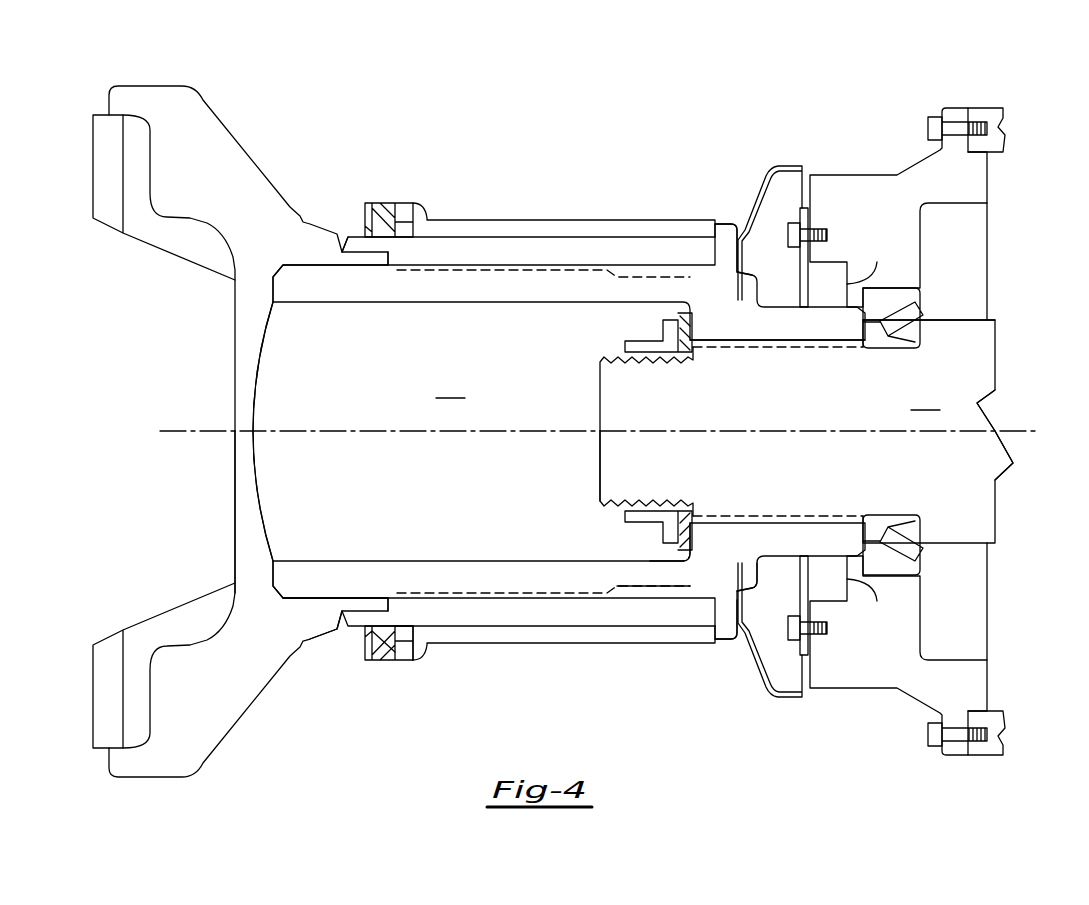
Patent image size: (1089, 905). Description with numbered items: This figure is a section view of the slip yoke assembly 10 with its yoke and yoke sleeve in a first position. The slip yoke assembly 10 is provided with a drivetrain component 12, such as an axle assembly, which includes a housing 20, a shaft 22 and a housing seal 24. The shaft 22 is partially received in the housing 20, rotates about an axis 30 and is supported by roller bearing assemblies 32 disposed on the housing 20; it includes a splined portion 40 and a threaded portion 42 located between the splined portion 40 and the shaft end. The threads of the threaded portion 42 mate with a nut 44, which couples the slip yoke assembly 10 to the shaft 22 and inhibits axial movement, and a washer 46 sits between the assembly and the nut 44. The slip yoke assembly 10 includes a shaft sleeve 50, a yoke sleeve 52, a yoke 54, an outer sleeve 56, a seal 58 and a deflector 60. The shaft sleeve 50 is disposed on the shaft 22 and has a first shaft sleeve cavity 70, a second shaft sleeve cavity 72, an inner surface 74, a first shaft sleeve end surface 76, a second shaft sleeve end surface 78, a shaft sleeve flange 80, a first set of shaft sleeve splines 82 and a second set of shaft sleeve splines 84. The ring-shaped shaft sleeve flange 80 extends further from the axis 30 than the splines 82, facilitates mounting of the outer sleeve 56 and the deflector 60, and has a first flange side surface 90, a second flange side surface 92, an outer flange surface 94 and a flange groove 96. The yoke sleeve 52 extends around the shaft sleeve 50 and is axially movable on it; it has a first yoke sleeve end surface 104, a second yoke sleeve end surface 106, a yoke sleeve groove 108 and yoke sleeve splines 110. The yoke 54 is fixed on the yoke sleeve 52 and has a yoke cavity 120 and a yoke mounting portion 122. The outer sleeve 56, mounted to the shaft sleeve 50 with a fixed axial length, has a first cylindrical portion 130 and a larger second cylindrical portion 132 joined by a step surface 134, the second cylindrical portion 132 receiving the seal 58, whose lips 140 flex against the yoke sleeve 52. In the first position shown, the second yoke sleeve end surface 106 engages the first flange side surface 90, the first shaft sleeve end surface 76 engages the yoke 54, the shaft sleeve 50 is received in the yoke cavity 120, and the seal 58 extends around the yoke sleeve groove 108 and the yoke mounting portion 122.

The slip yoke assembly 10 is at (112, 74).
The drivetrain component 12 is at (986, 104).
The housing 20 is at (850, 175).
The shaft 22 is at (806, 431).
The housing seal 24 is at (873, 280).
The axis 30 is at (1020, 420).
The roller bearing assembly 32 is at (921, 300).
The splined portion 40 is at (795, 340).
The threaded portion 42 is at (612, 503).
The nut 44 is at (637, 326).
The washer 46 is at (682, 546).
The shaft sleeve 50 is at (287, 280).
The yoke sleeve 52 is at (537, 245).
The yoke 54 is at (93, 167).
The outer sleeve 56 is at (487, 222).
The seal 58 is at (365, 232).
The deflector 60 is at (754, 184).
The first shaft sleeve cavity 70 is at (451, 385).
The second shaft sleeve cavity 72 is at (841, 500).
The inner surface 74 is at (340, 560).
The first shaft sleeve end surface 76 is at (236, 572).
The second shaft sleeve end surface 78 is at (914, 548).
The shaft sleeve flange 80 is at (708, 242).
The first set of shaft sleeve splines 82 is at (467, 603).
The second set of shaft sleeve splines 84 is at (740, 340).
The first flange side surface 90 is at (672, 623).
The second flange side surface 92 is at (740, 608).
The outer flange surface 94 is at (730, 640).
The flange groove 96 is at (693, 627).
The first yoke sleeve end surface 104 is at (340, 617).
The second yoke sleeve end surface 106 is at (673, 617).
The yoke sleeve groove 108 is at (375, 603).
The set of yoke sleeve splines 110 is at (618, 595).
The yoke cavity 120 is at (266, 406).
The yoke mounting portion 122 is at (367, 266).
The first cylindrical portion 130 is at (513, 645).
The second cylindrical portion 132 is at (387, 650).
The step surface 134 is at (403, 657).
The lips 140 is at (362, 628).